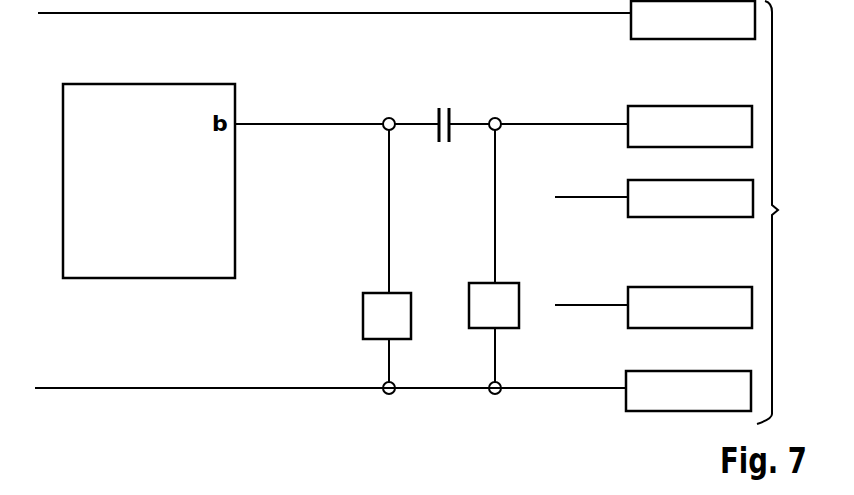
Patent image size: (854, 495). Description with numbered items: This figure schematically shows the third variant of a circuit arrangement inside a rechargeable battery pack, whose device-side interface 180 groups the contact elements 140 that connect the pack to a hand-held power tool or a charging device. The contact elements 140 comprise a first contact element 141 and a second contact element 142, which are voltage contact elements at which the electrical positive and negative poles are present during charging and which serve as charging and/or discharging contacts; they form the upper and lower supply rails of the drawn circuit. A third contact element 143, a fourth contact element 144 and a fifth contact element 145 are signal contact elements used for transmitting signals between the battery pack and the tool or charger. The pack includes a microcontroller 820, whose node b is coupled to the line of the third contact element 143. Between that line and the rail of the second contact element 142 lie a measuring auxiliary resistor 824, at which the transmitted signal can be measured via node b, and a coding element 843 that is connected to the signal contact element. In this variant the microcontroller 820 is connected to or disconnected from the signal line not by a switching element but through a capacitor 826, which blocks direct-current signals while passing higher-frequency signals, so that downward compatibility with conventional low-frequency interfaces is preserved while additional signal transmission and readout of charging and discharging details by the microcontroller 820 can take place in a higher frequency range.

The microcontroller 820 is at (140, 84).
The capacitor 826 is at (445, 108).
The measuring auxiliary resistor 824 is at (387, 316).
The coding element 843 is at (494, 305).
The contact elements 140 is at (690, 206).
The first contact element 141 is at (693, 20).
The second contact element 142 is at (688, 391).
The third contact element 143 is at (690, 126).
The fourth contact element 144 is at (690, 198).
The fifth contact element 145 is at (690, 307).
The interface 180 is at (779, 212).